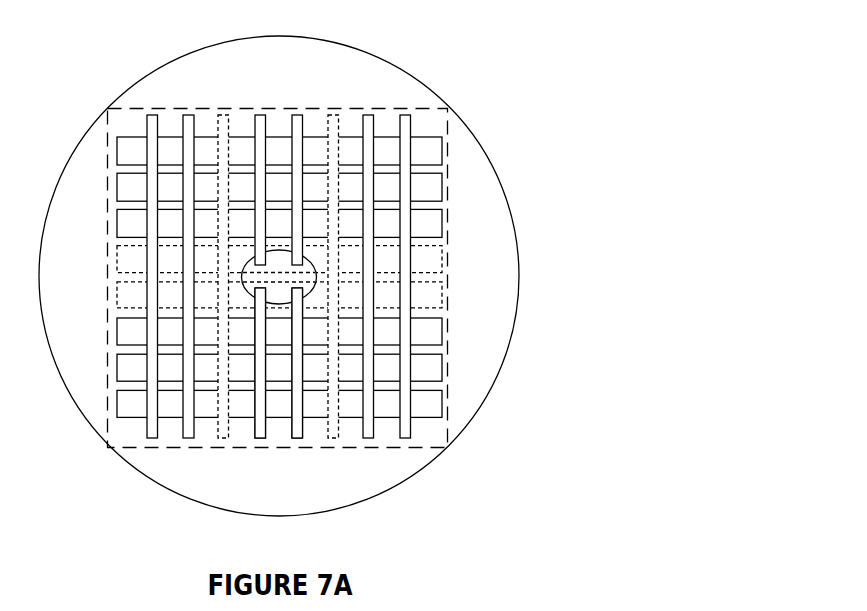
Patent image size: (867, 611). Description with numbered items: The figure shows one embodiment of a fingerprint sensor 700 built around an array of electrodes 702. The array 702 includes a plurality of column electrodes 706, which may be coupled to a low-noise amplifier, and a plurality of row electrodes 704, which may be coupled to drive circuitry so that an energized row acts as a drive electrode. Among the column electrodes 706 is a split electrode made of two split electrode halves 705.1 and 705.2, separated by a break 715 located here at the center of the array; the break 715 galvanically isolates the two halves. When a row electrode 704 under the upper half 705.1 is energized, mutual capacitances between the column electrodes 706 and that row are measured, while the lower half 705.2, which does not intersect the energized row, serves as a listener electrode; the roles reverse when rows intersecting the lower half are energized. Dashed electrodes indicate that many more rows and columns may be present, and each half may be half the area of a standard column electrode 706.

The fingerprint sensor 700 is at (482, 30).
The array of electrodes 702 is at (107, 278).
The row electrodes 704 is at (455, 271).
The split electrode half 705.1 is at (300, 115).
The split electrode half 705.2 is at (259, 440).
The column electrodes 706 is at (406, 115).
The break 715 is at (305, 265).